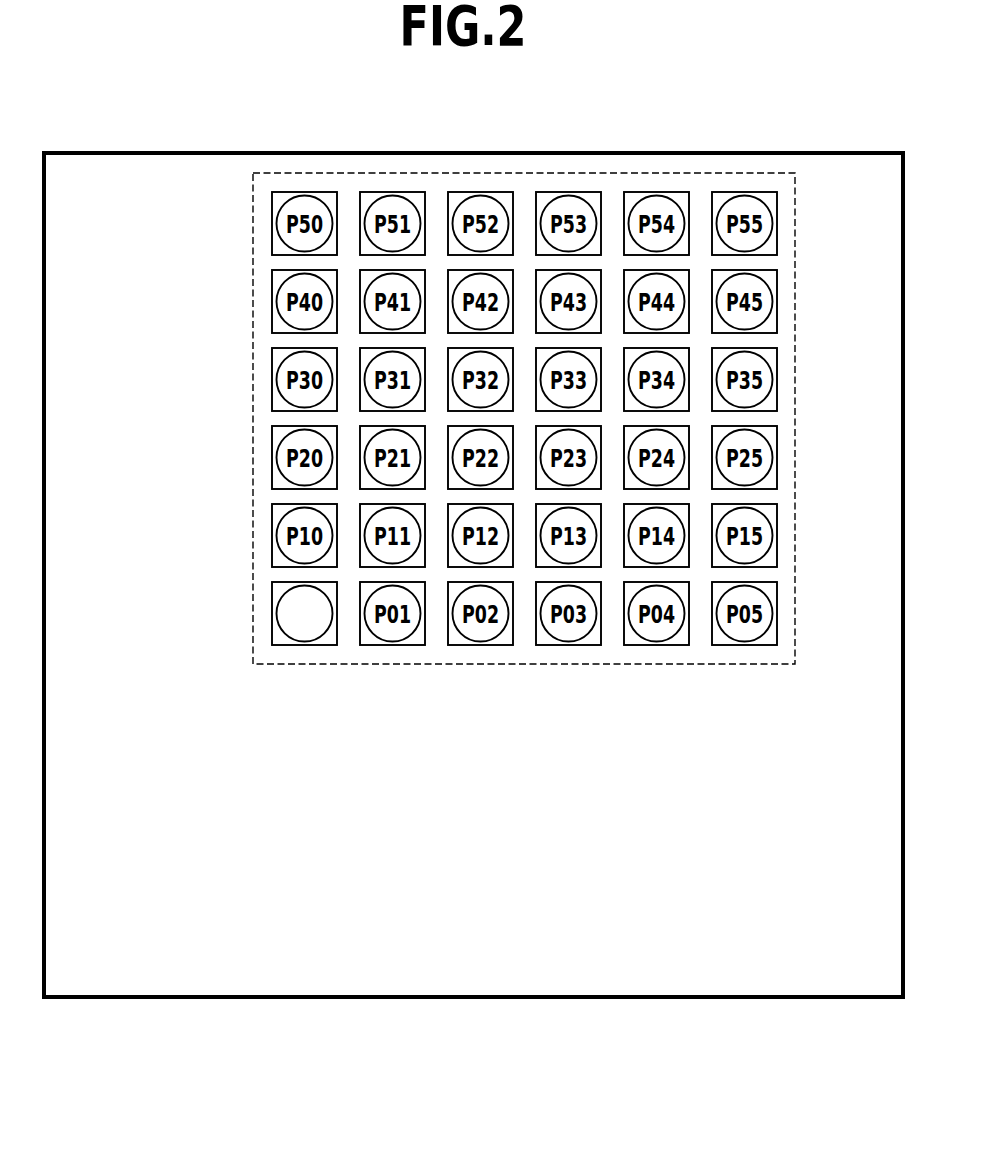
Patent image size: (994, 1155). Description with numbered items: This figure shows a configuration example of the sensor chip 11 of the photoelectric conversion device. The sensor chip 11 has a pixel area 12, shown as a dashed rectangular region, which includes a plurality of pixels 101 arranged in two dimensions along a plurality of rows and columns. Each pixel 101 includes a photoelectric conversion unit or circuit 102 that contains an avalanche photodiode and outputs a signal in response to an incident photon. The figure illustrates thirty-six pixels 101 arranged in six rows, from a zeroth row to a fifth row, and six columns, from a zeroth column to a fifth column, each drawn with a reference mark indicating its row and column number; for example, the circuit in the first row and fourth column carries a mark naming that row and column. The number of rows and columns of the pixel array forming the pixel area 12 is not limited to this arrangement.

The sensor chip 11 is at (798, 152).
The pixel area 12 is at (517, 172).
The pixel 101 is at (272, 633).
The photoelectric conversion unit 102 is at (307, 630).